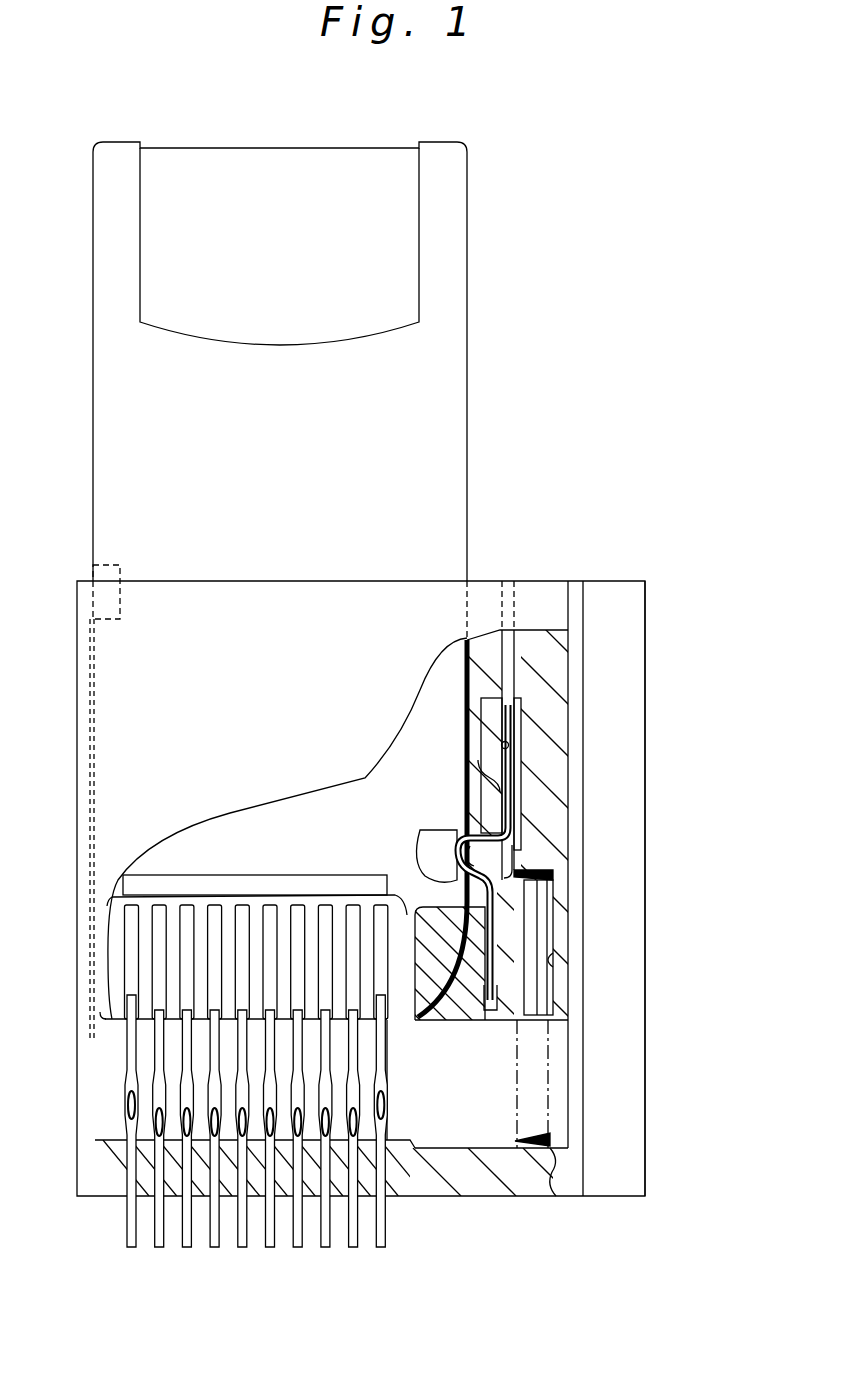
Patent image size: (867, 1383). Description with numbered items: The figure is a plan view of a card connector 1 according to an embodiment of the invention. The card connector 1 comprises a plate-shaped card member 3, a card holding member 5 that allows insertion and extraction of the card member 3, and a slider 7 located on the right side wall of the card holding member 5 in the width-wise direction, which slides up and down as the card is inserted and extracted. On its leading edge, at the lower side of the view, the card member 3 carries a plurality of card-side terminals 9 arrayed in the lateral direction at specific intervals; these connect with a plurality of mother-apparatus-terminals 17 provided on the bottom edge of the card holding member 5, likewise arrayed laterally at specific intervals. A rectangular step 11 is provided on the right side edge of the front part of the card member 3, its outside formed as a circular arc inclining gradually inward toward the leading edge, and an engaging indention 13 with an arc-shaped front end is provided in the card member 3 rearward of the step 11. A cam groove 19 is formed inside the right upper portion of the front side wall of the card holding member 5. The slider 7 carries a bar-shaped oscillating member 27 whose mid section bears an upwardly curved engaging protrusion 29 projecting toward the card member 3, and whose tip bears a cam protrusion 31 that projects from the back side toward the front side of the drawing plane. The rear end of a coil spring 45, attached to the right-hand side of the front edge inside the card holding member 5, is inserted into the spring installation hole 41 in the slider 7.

The card connector 1 is at (563, 361).
The card member 3 is at (447, 462).
The card holding member 5 is at (646, 649).
The slider 7 is at (568, 805).
The card-side terminals 9 is at (255, 893).
The step 11 is at (415, 905).
The engaging indention 13 is at (418, 857).
The mother-apparatus-terminals 17 is at (103, 1255).
The cam groove 19 is at (503, 745).
The oscillating member 27 is at (448, 845).
The engaging protrusion 29 is at (452, 843).
The cam protrusion 31 is at (510, 745).
The spring installation hole 41 is at (553, 960).
The coil spring 45 is at (553, 1082).